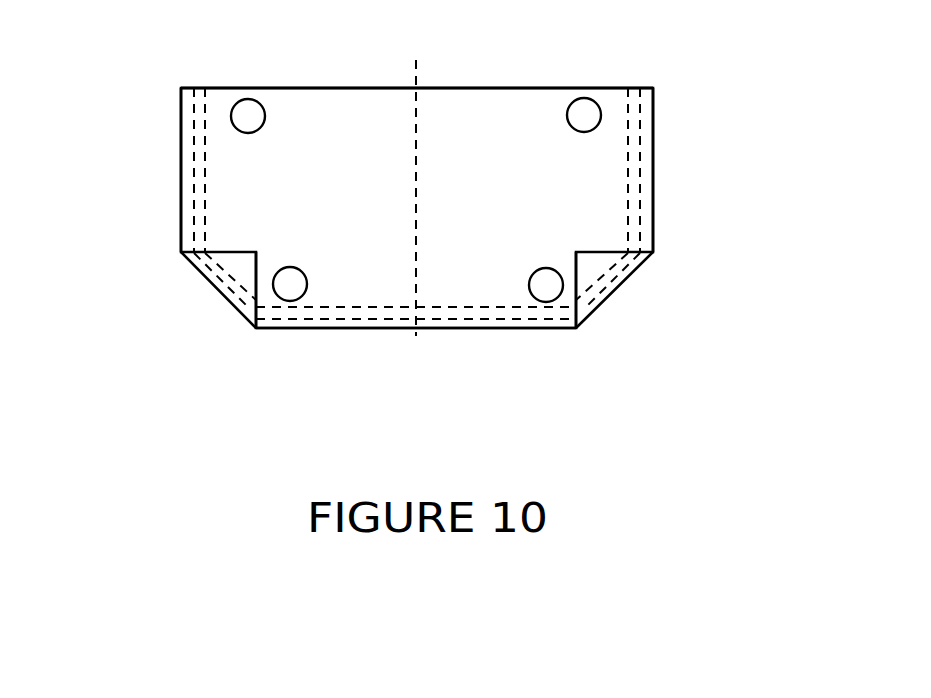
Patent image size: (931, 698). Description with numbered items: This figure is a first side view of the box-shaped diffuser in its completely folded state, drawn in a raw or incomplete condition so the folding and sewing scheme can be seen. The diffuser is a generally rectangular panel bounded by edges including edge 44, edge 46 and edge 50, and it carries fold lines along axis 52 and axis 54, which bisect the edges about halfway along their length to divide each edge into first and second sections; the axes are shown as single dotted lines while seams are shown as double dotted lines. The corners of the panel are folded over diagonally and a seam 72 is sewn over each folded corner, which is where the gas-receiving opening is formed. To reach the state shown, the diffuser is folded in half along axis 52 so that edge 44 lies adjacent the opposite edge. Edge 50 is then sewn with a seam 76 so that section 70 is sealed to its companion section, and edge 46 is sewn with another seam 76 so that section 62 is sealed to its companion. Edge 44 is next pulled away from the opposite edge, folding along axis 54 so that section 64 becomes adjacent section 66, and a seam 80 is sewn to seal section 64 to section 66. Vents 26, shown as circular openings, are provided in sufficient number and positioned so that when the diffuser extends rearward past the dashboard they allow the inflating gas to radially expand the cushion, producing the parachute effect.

The vents 26 is at (265, 114).
The edge 44 is at (459, 352).
The edge 46 is at (690, 128).
The edge 50 is at (128, 136).
The axis 52 is at (302, 88).
The axis 54 is at (415, 345).
The section 62 is at (653, 196).
The section 64 is at (290, 330).
The section 66 is at (515, 330).
The section 70 is at (181, 211).
The seam 72 is at (212, 287).
The seam 76 is at (205, 178).
The seam 80 is at (343, 307).